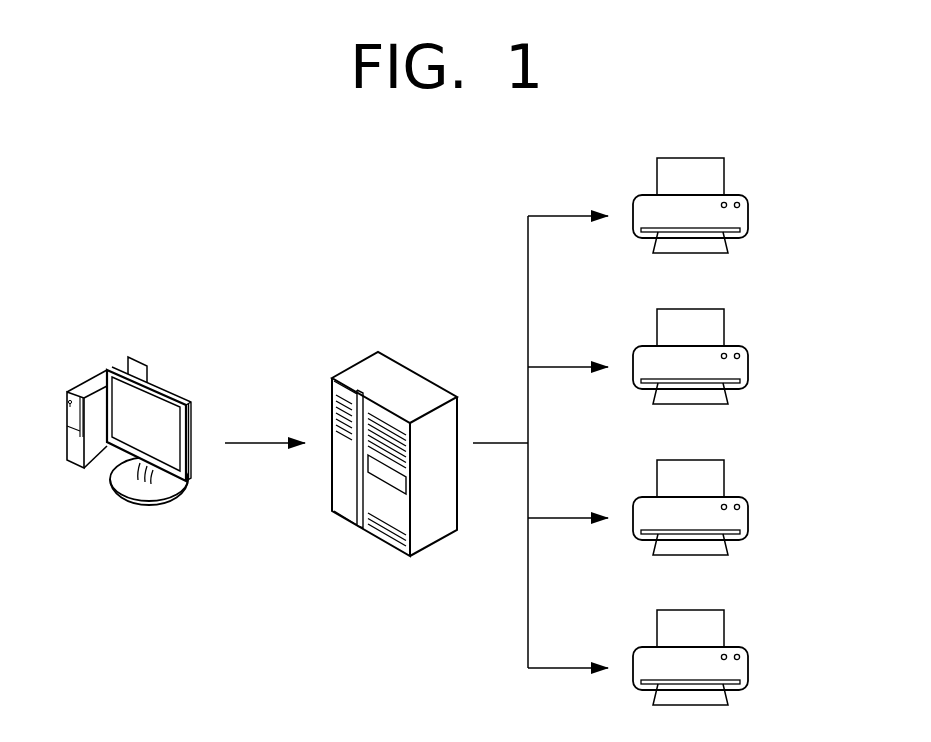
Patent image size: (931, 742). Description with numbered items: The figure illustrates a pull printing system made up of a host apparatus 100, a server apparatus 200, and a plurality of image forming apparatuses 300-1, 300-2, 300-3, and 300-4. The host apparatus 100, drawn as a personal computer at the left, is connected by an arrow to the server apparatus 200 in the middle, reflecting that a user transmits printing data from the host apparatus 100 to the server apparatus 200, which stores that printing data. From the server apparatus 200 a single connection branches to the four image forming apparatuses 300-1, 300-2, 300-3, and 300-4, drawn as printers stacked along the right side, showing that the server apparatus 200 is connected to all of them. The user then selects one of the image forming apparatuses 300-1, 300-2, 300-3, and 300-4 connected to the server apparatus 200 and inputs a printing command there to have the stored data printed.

The host apparatus 100 is at (135, 357).
The server apparatus 200 is at (363, 367).
The image forming apparatus 300-1 is at (748, 213).
The image forming apparatus 300-2 is at (748, 364).
The image forming apparatus 300-3 is at (748, 515).
The image forming apparatus 300-4 is at (748, 665).